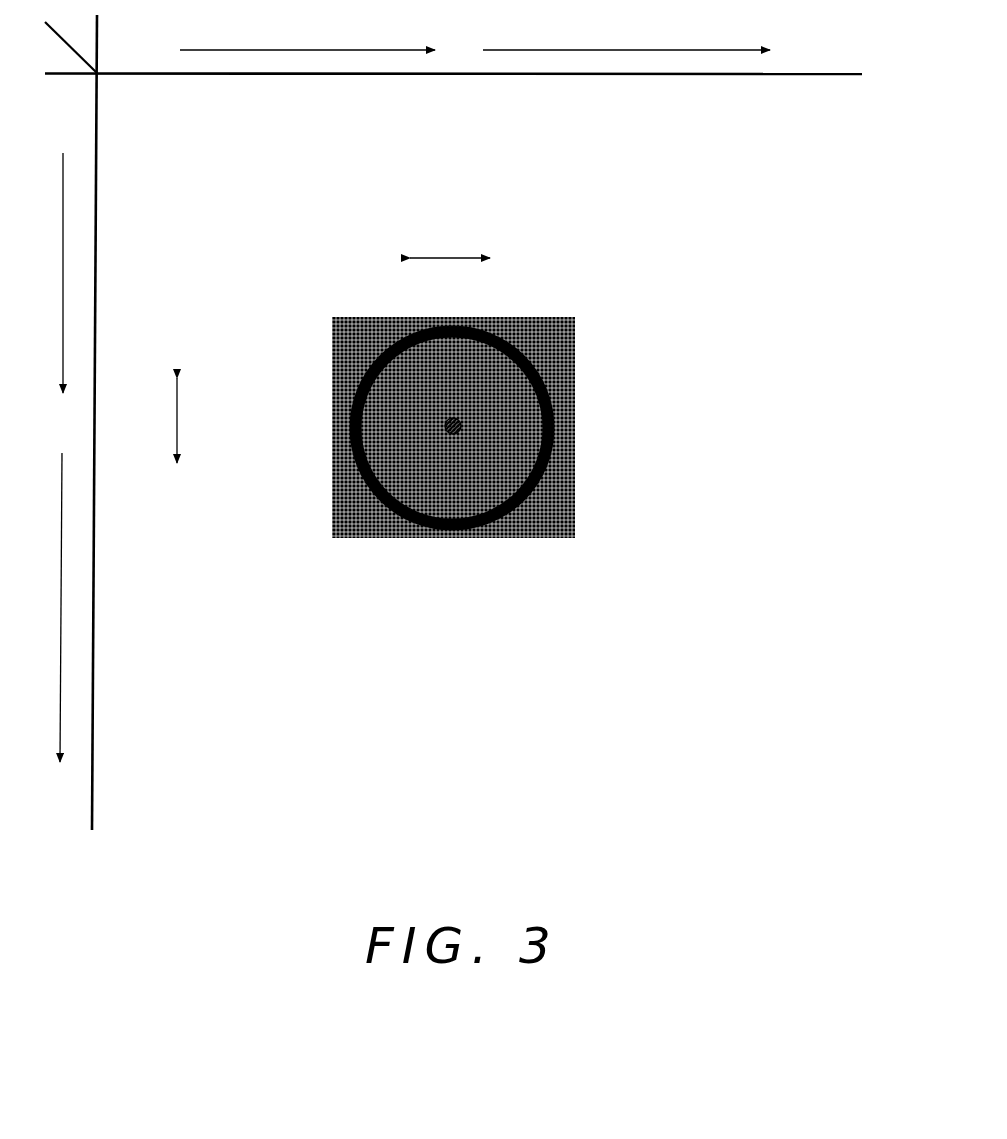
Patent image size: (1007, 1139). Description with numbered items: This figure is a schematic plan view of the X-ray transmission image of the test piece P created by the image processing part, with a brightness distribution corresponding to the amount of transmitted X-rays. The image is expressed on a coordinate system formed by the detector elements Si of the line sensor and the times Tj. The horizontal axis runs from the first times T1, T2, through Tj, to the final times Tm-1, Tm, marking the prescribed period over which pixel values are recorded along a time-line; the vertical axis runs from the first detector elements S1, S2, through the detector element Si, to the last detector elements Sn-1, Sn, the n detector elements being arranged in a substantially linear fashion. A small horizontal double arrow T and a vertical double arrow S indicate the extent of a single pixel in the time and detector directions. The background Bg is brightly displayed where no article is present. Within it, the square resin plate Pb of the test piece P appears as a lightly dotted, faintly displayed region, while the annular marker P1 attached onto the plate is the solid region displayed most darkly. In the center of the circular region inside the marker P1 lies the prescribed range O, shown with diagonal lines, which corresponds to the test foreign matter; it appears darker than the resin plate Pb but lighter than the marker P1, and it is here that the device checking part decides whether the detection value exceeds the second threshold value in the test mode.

The background Bg is at (279, 194).
The time T1 is at (120, 49).
The time T2 is at (153, 49).
The times Tj is at (475, 50).
The time Tm-1 is at (803, 49).
The time Tm is at (847, 49).
The first detector element S1 is at (60, 99).
The second detector element S2 is at (60, 128).
The detector elements Si is at (59, 457).
The second-to-last detector element Sn-1 is at (64, 793).
The n-th detector element Sn is at (57, 823).
The pixel width in column direction T is at (464, 258).
The pixel height in row direction S is at (176, 420).
The test piece P is at (337, 355).
The square resin plate Pb is at (548, 326).
The annular marker P1 is at (553, 397).
The prescribed range O is at (454, 434).